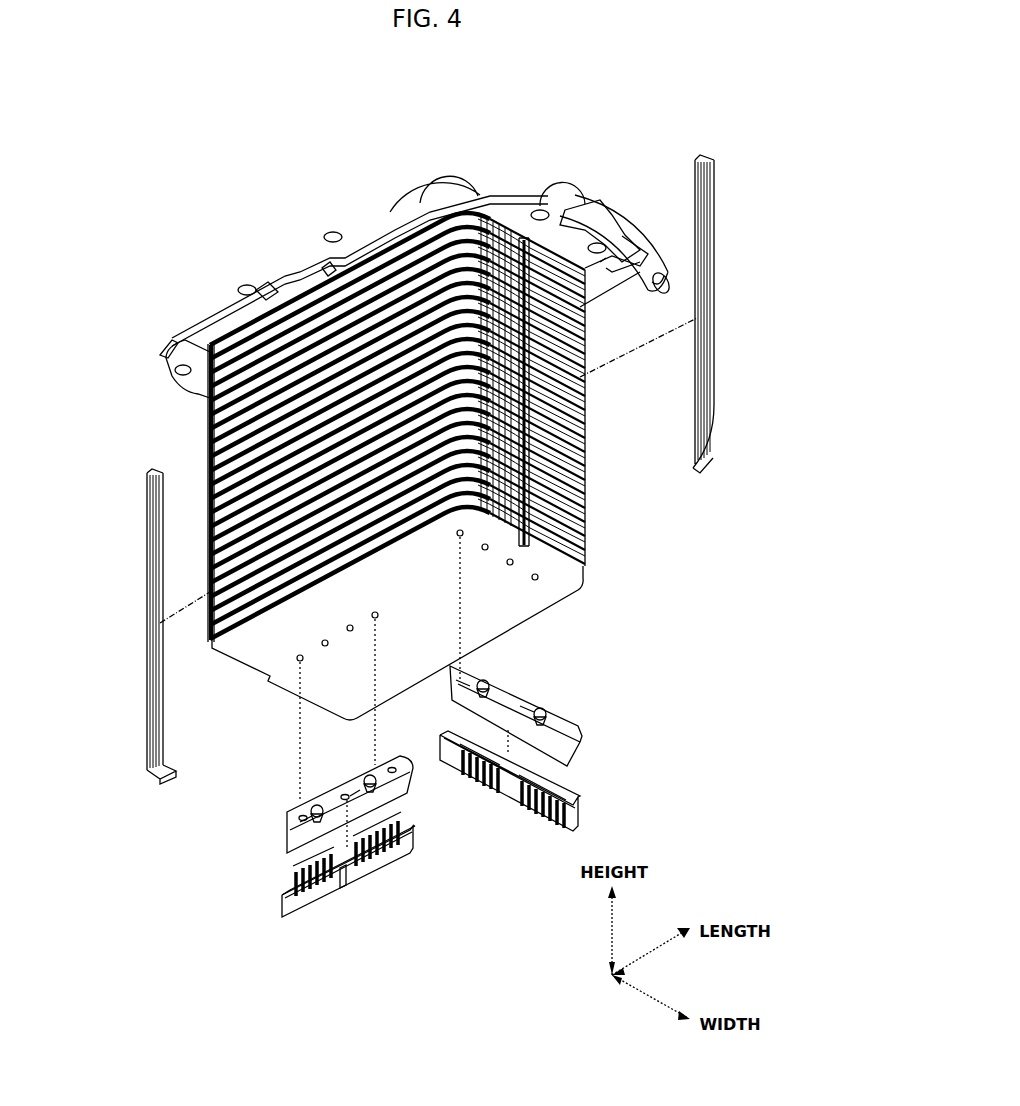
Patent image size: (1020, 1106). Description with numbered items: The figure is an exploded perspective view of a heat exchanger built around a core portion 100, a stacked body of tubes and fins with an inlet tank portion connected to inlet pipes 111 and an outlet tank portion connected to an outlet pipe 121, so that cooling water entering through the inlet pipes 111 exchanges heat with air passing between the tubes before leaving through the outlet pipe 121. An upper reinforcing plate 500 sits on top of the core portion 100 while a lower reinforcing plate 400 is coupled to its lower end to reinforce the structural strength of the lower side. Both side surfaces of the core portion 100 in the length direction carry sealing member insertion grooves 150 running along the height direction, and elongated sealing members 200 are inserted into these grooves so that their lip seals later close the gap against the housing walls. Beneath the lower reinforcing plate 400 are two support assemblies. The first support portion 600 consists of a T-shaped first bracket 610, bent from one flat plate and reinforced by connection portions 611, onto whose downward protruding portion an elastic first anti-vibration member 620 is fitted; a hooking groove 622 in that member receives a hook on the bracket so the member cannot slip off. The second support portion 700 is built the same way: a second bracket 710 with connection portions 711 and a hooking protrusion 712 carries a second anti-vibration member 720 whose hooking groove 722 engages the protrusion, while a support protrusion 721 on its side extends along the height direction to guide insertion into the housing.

The core portion 100 is at (588, 505).
The inlet pipe 111 is at (450, 182).
The outlet pipe 121 is at (590, 198).
The sealing member insertion groove 150 is at (585, 470).
The sealing member 200 is at (714, 306).
The lower reinforcing plate 400 is at (575, 580).
The upper reinforcing plate 500 is at (168, 360).
The first support portion 600 is at (576, 782).
The first bracket 610 is at (551, 719).
The connection portion 611 is at (540, 712).
The first anti-vibration member 620 is at (546, 814).
The hooking groove 622 is at (505, 800).
The second support portion 700 is at (282, 867).
The second bracket 710 is at (293, 832).
The connection portion 711 is at (298, 798).
The hooking protrusion 712 is at (318, 778).
The second anti-vibration member 720 is at (312, 895).
The support protrusion 721 is at (410, 848).
The hooking groove 722 is at (340, 885).